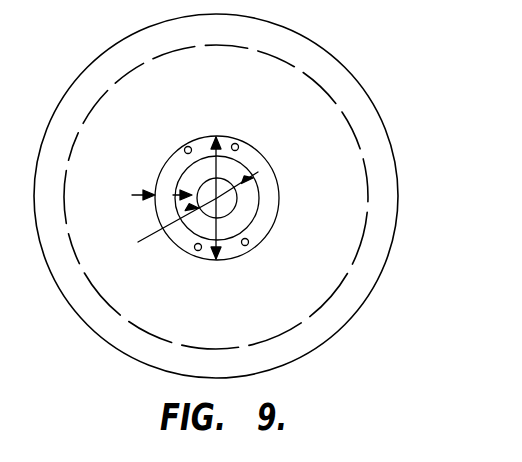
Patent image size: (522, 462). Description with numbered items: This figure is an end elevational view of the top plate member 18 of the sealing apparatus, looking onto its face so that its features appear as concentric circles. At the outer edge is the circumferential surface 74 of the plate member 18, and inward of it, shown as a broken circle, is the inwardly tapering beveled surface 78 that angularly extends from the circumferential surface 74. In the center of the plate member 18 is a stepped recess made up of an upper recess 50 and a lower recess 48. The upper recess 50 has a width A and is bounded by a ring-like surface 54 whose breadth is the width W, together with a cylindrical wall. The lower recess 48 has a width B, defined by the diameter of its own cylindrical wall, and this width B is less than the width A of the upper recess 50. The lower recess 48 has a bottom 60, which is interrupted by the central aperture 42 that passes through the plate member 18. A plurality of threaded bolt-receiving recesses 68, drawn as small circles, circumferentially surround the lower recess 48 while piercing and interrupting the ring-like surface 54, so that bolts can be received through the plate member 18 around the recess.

The plate member 18 is at (355, 73).
The circumferential surface 74 is at (397, 175).
The beveled surface 78 is at (370, 127).
The surface 54 is at (248, 152).
The aperture 42 is at (258, 172).
The lower recess 48 is at (243, 210).
The upper recess 50 is at (258, 217).
The bottom 60 is at (205, 226).
The threaded bolt-receiving recesses 68 is at (187, 146).
The width A is at (218, 229).
The width B is at (189, 216).
The width W is at (163, 191).